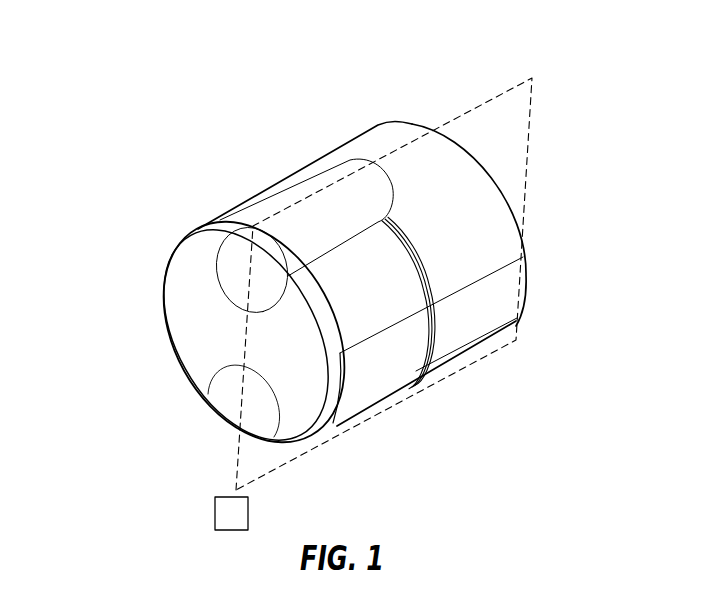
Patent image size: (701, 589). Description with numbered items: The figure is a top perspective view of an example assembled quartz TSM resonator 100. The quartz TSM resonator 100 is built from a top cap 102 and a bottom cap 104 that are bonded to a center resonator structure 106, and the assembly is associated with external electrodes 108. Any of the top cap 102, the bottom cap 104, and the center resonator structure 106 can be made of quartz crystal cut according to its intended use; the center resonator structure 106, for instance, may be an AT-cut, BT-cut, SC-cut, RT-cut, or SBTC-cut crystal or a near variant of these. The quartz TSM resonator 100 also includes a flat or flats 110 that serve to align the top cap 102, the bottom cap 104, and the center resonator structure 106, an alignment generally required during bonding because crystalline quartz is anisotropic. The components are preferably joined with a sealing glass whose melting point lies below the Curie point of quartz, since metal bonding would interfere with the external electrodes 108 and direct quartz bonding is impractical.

The quartz TSM resonator 100 is at (333, 280).
The top cap 102 is at (185, 290).
The bottom cap 104 is at (492, 222).
The center resonator structure 106 is at (413, 244).
The external electrodes 108 is at (290, 196).
The flat or flats 110 is at (481, 343).